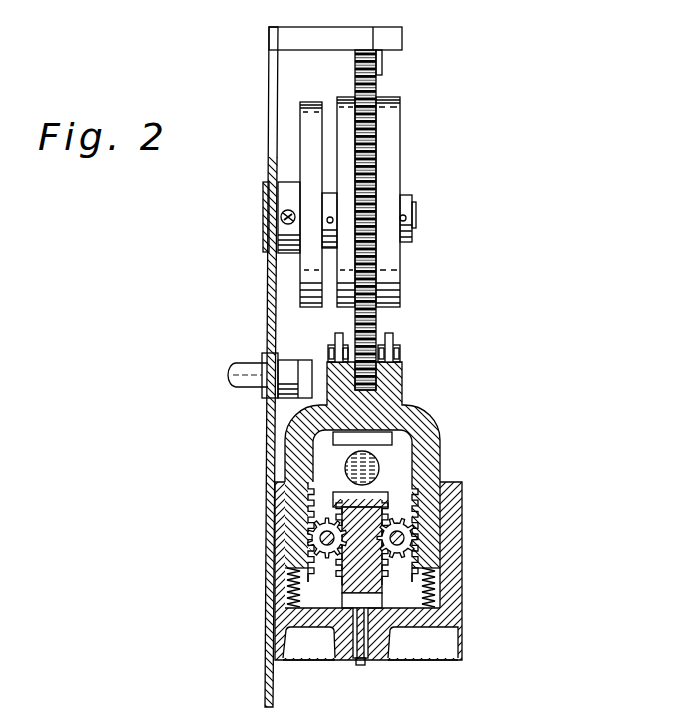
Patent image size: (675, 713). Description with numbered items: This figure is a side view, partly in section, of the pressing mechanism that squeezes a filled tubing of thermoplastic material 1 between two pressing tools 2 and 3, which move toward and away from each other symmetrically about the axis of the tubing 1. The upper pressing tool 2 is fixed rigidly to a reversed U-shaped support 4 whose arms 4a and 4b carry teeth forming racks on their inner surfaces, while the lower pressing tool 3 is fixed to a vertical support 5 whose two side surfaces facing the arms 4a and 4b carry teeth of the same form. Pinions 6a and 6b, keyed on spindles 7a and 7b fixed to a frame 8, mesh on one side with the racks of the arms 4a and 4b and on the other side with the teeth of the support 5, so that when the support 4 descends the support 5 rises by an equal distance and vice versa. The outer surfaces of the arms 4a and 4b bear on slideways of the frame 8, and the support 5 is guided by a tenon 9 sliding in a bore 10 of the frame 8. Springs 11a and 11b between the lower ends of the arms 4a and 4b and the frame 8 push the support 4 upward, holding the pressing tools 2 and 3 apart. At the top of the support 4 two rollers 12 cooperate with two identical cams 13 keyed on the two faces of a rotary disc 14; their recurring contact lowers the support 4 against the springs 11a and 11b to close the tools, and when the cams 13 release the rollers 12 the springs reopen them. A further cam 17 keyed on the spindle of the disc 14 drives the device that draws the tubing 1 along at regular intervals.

The tubing of thermoplastic material 1 is at (378, 468).
The pressing tool 2 is at (383, 440).
The pressing tool 3 is at (388, 497).
The reversed U-shaped support 4 is at (288, 436).
The arm 4a is at (287, 514).
The arm 4b is at (420, 523).
The vertical support 5 is at (343, 582).
The pinion 6a is at (312, 549).
The pinion 6b is at (416, 550).
The spindle 7a is at (316, 539).
The spindle 7b is at (399, 548).
The frame 8 is at (456, 612).
The tenon 9 is at (356, 634).
The bore 10 is at (359, 661).
The spring 11a is at (287, 586).
The spring 11b is at (438, 586).
The roller 12 is at (330, 344).
The cam 13 is at (400, 256).
The rotary disc 14 is at (378, 156).
The cam 17 is at (303, 113).